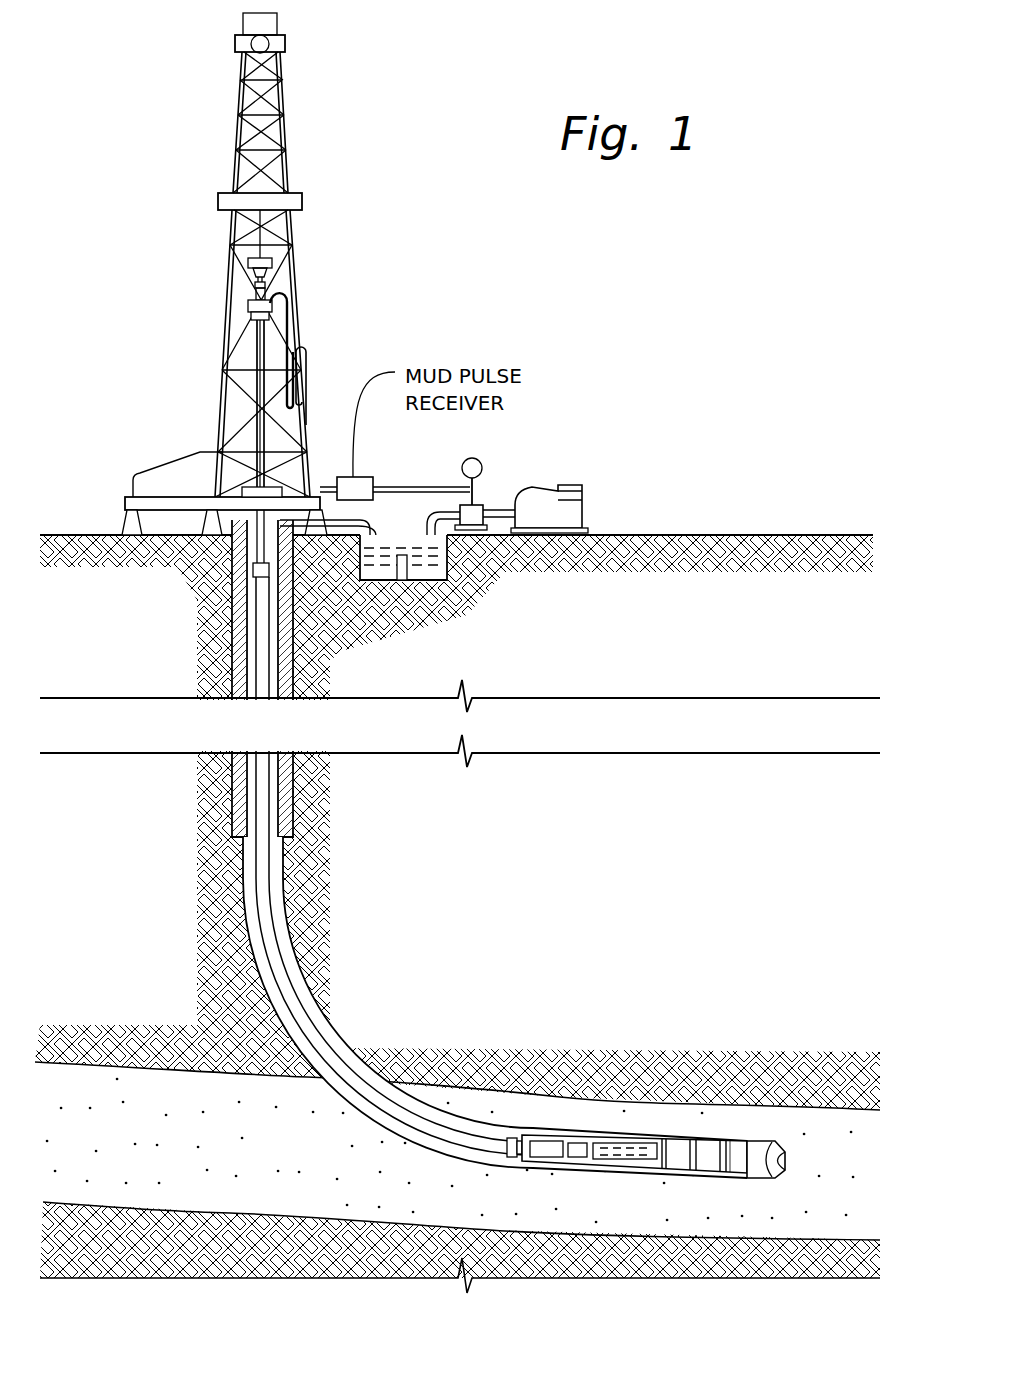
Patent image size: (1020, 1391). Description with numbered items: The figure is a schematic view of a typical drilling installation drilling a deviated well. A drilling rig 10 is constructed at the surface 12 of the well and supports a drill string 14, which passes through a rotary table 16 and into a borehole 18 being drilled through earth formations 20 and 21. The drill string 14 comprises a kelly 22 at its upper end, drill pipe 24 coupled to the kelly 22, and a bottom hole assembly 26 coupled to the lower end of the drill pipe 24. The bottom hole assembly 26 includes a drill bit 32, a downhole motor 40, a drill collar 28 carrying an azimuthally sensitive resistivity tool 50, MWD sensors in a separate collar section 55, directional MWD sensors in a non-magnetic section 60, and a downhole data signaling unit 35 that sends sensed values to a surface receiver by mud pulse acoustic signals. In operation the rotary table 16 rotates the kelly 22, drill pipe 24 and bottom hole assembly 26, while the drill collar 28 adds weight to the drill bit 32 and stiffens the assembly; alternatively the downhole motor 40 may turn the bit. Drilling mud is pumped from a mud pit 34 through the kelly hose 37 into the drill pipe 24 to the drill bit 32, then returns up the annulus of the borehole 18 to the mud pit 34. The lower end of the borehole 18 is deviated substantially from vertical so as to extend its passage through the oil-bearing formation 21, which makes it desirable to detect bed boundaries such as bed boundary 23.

The drilling rig 10 is at (338, 326).
The surface 12 is at (647, 535).
The drill string 14 is at (300, 1012).
The rotary table 16 is at (241, 490).
The borehole 18 is at (286, 892).
The earth formation 20 is at (598, 908).
The oil-bearing formation 21 is at (280, 1153).
The kelly 22 is at (254, 430).
The bed boundary 23 is at (460, 1202).
The drill pipe 24 is at (328, 1060).
The bottom hole assembly 26 is at (647, 1123).
The drill collar 28 is at (709, 1152).
The drill bit 32 is at (768, 1150).
The mud pit 34 is at (373, 578).
The downhole data signaling unit 35 is at (571, 1147).
The kelly hose 37 is at (410, 485).
The downhole motor 40 is at (735, 1152).
The azimuthally sensitive resistivity tool 50 is at (689, 1132).
The collar section 55 is at (614, 1147).
The non-magnetic section 60 is at (528, 1140).